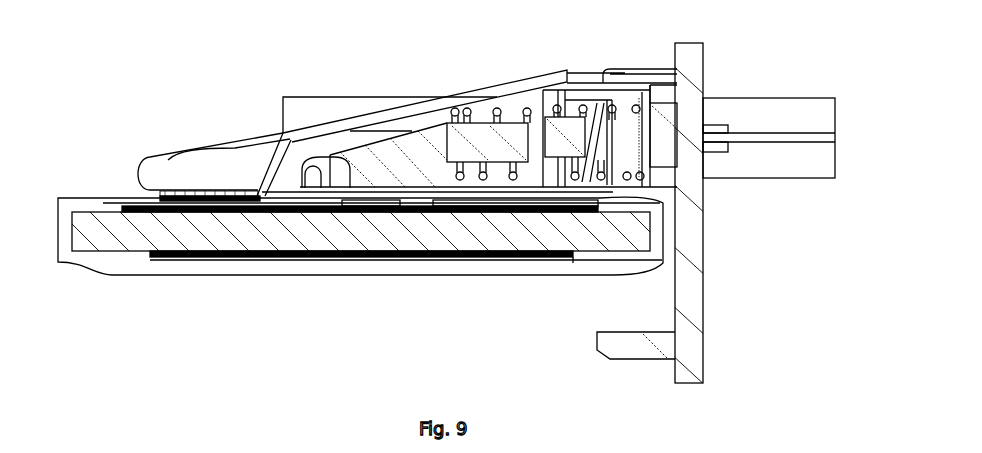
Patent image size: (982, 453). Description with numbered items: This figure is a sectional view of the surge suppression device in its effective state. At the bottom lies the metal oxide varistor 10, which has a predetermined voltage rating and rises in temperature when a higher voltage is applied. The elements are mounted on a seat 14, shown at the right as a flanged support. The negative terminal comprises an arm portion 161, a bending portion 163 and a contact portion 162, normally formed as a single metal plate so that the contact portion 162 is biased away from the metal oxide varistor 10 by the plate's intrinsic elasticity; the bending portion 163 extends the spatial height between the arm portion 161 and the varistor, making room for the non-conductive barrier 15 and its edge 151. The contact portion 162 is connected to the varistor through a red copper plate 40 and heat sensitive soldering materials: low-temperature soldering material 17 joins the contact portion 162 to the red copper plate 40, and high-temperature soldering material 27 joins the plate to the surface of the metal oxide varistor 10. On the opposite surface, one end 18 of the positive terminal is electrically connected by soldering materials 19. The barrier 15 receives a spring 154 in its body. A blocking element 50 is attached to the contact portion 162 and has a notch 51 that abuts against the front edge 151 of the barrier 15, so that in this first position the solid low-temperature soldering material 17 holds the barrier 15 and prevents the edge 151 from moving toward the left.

The metal oxide varistor 10 is at (500, 243).
The seat 14 is at (697, 297).
The non-conductive barrier 15 is at (407, 176).
The low-temperature soldering material 17 is at (133, 203).
The end of positive terminal 18 is at (402, 257).
The soldering materials 19 is at (151, 252).
The high-temperature soldering material 27 is at (122, 211).
The red copper plate 40 is at (129, 205).
The blocking element 50 is at (220, 157).
The notch 51 is at (297, 177).
The edge 151 is at (308, 163).
The spring 154 is at (498, 108).
The arm portion 161 is at (413, 110).
The contact portion 162 is at (203, 196).
The bending portion 163 is at (263, 186).